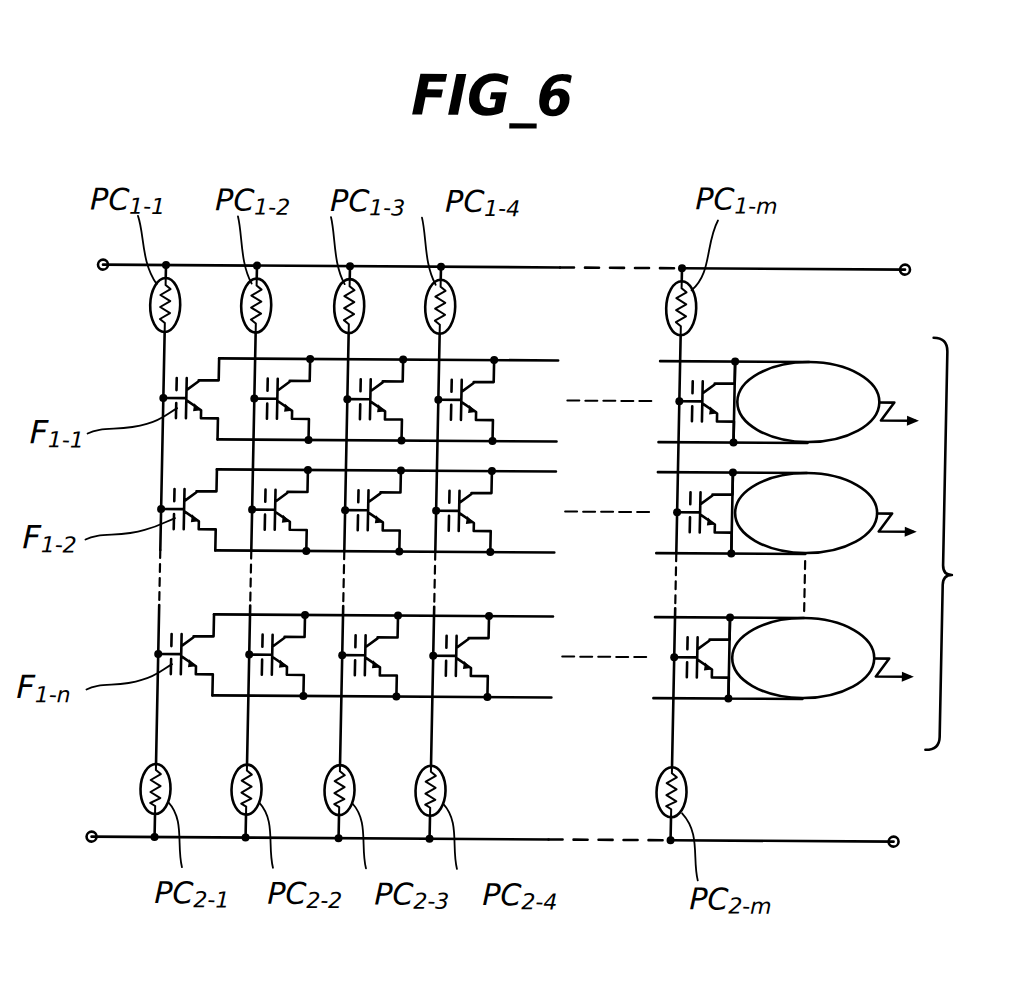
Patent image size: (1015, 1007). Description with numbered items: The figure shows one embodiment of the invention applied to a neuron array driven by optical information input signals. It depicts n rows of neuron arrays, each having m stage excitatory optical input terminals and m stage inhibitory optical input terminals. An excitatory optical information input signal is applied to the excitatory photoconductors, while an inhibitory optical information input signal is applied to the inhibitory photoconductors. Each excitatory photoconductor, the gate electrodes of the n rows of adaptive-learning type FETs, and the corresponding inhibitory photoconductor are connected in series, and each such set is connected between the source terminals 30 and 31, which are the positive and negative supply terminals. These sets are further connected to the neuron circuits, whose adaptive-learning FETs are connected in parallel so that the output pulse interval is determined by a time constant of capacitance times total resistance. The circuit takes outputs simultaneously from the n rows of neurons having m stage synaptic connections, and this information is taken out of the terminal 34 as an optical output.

The +V0 terminal 30 is at (106, 272).
The -V0 terminal 31 is at (90, 831).
The optical output portion 34 is at (822, 543).